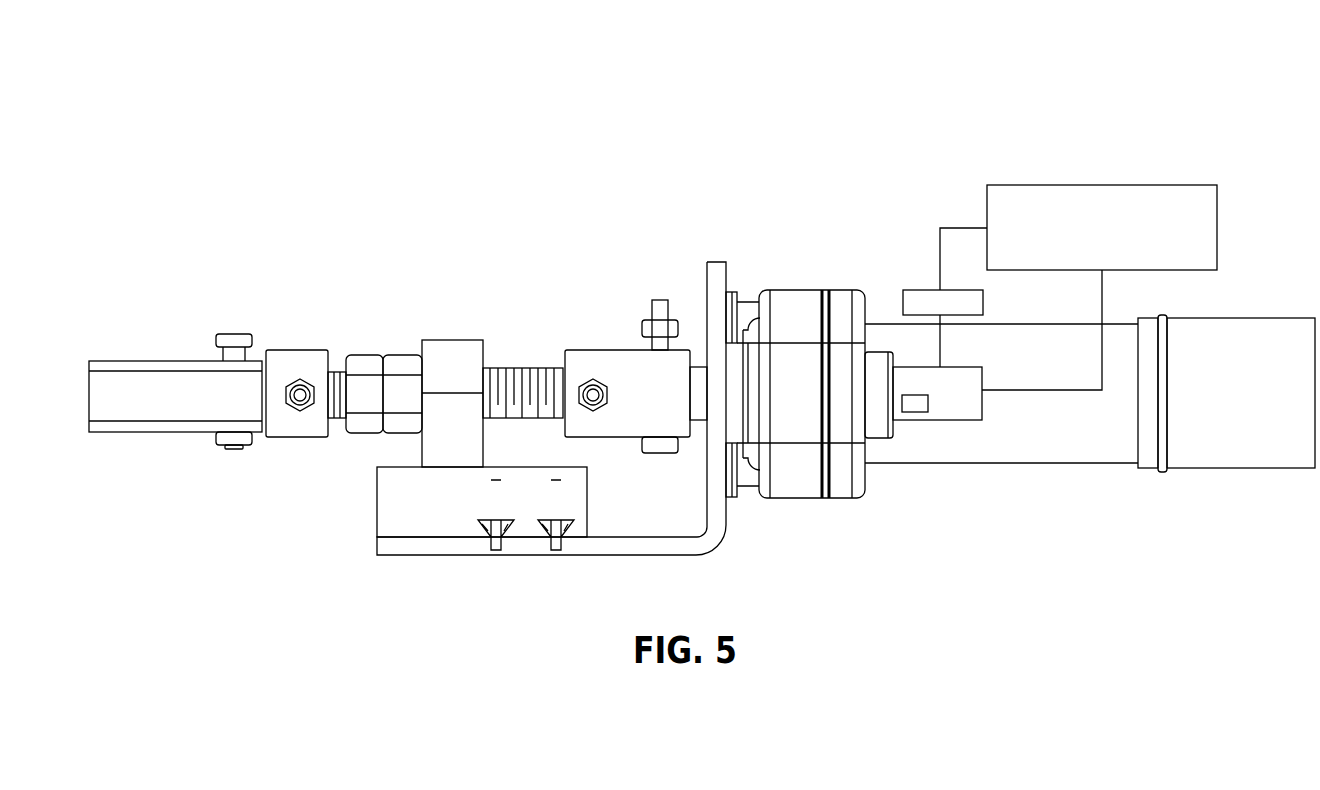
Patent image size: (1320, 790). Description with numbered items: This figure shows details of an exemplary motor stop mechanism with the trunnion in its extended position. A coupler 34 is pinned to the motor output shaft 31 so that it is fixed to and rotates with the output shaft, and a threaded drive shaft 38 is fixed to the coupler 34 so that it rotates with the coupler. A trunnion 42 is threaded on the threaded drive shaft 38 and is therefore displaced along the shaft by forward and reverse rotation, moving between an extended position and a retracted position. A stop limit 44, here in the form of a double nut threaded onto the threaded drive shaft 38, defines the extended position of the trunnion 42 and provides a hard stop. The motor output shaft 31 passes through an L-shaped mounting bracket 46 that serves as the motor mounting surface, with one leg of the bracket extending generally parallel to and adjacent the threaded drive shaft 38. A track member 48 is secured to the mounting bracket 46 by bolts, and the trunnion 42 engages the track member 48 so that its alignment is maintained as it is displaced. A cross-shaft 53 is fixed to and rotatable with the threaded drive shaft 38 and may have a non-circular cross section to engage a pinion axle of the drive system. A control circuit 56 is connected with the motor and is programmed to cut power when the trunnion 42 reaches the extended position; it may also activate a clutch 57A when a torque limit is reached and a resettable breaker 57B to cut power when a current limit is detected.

The cross-shaft 53 is at (163, 361).
The stop limit 44 is at (367, 425).
The trunnion 42 is at (448, 355).
The threaded drive shaft 38 is at (520, 368).
The coupler 34 is at (620, 365).
The motor output shaft 31 is at (702, 372).
The L-shaped mounting bracket 46 is at (710, 535).
The track member 48 is at (433, 517).
The clutch 57A is at (920, 407).
The resettable breaker 57B is at (928, 295).
The control circuit 56 is at (1160, 185).